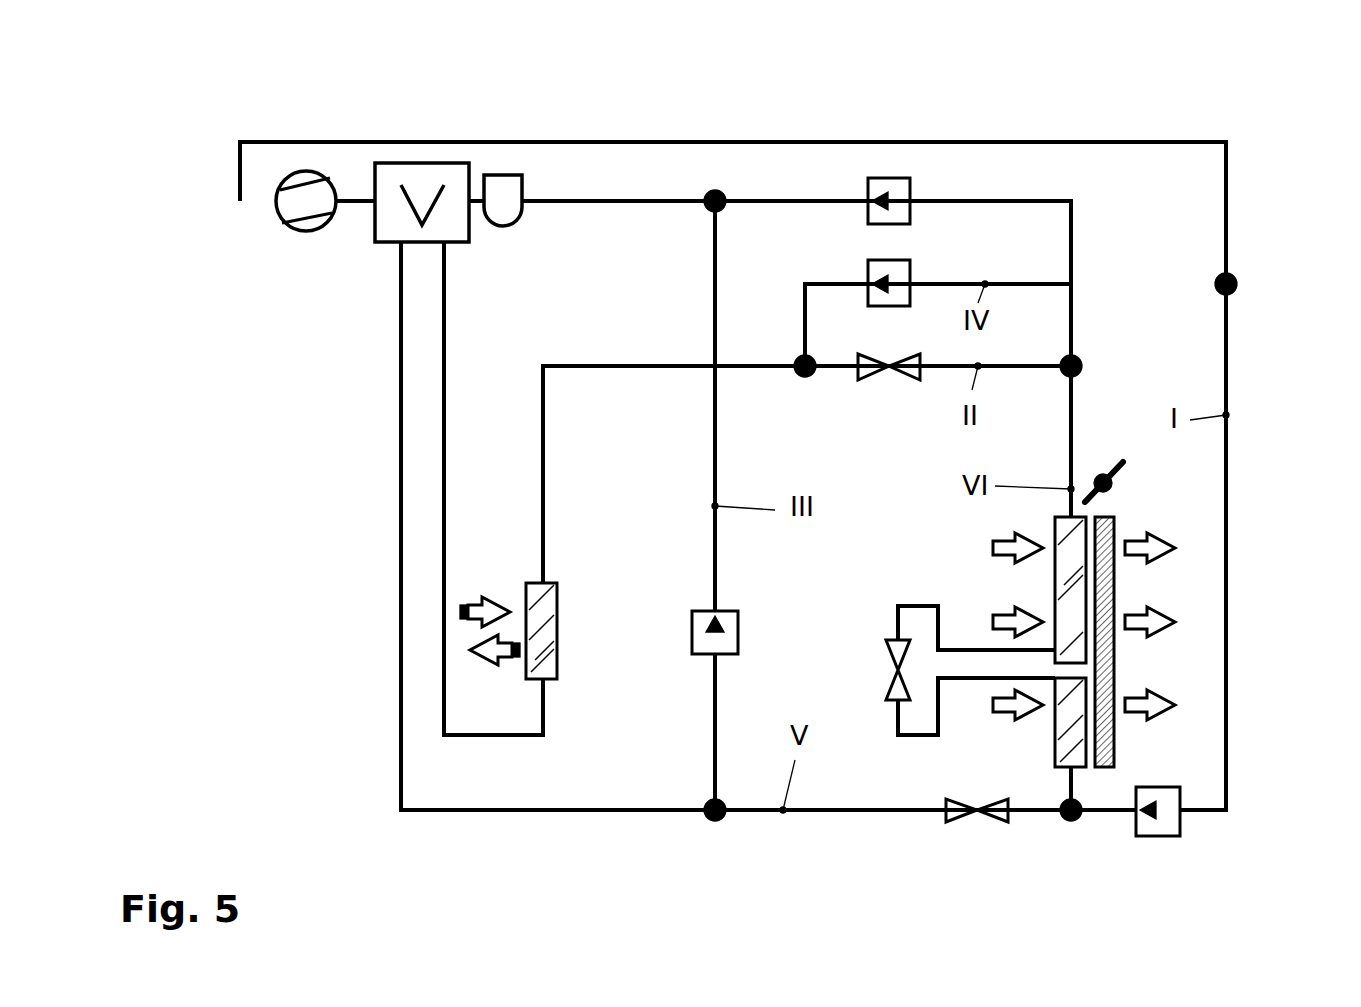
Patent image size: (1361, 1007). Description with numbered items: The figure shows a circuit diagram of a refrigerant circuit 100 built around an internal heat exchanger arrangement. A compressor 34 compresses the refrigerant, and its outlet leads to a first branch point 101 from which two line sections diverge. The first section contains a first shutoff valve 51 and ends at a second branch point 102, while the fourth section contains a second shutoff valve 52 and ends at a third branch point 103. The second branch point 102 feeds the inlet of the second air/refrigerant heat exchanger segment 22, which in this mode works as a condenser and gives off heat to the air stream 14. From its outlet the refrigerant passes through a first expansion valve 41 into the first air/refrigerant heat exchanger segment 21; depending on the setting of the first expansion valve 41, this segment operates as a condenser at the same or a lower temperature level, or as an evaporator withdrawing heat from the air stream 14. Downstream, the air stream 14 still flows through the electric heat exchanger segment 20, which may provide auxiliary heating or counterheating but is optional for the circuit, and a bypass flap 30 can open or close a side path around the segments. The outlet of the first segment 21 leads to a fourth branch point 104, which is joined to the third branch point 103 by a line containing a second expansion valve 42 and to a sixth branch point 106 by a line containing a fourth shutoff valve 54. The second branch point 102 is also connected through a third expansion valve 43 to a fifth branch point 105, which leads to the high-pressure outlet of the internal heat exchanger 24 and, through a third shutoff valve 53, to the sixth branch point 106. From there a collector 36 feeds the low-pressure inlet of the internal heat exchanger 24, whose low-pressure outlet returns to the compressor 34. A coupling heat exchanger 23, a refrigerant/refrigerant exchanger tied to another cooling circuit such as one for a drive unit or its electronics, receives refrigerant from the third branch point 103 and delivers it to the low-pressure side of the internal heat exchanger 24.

The refrigerant circuit 100 is at (1236, 112).
The first branch point 101 is at (1226, 284).
The second branch point 102 is at (1071, 810).
The third branch point 103 is at (805, 366).
The fourth branch point 104 is at (1071, 366).
The fifth branch point 105 is at (715, 810).
The sixth branch point 106 is at (715, 201).
The air stream 14 is at (1158, 625).
The electric heat exchanger segment 20 is at (1105, 535).
The first air/refrigerant heat exchanger segment 21 is at (1075, 590).
The second air/refrigerant heat exchanger segment 22 is at (1075, 730).
The coupling heat exchanger 23 is at (543, 670).
The internal heat exchanger 24 is at (418, 172).
The bypass flap 30 is at (1110, 480).
The compressor 34 is at (306, 201).
The collector 36 is at (509, 188).
The first expansion valve 41 is at (898, 670).
The second expansion valve 42 is at (889, 366).
The third expansion valve 43 is at (977, 810).
The first shutoff valve 51 is at (1166, 799).
The second shutoff valve 52 is at (893, 272).
The third shutoff valve 53 is at (705, 645).
The fourth shutoff valve 54 is at (893, 190).